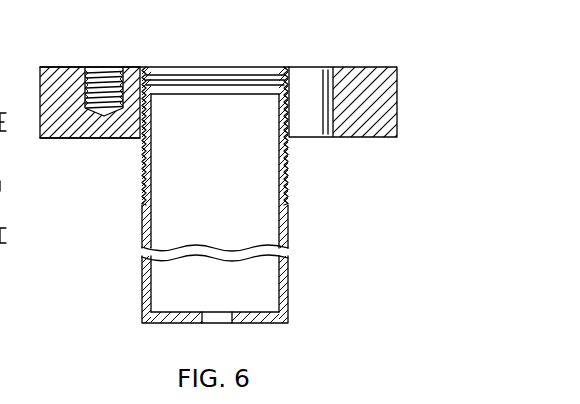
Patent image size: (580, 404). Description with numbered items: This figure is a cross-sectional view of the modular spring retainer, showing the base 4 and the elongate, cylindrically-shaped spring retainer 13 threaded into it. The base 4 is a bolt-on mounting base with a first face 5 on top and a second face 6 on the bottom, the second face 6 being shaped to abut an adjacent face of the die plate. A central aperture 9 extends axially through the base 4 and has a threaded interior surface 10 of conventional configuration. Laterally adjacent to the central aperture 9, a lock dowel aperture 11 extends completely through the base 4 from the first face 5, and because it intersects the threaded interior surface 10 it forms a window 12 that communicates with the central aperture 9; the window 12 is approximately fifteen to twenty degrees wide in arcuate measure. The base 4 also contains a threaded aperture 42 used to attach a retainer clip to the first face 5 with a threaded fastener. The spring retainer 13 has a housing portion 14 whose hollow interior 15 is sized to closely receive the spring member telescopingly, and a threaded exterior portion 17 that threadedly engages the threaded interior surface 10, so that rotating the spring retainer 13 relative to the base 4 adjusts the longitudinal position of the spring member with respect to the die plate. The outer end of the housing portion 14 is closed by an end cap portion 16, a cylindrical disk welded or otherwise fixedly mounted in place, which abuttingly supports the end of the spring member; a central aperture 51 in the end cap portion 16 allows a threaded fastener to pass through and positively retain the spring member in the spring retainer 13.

The base 4 is at (40, 67).
The first face 5 is at (71, 67).
The threaded aperture 42 is at (102, 67).
The second face 6 is at (88, 139).
The central aperture 9 is at (170, 67).
The threaded interior surface 10 is at (208, 78).
The lock dowel aperture 11 is at (307, 78).
The window 12 is at (277, 106).
The housing portion 14 is at (289, 208).
The threaded exterior portion 17 is at (289, 152).
The hollow interior 15 is at (244, 185).
The spring retainer 13 is at (143, 323).
The end cap portion 16 is at (163, 325).
The central aperture of end cap portion 51 is at (218, 325).